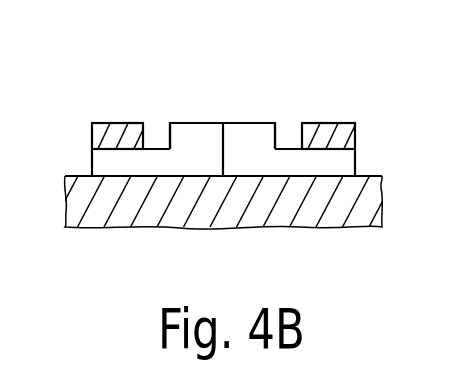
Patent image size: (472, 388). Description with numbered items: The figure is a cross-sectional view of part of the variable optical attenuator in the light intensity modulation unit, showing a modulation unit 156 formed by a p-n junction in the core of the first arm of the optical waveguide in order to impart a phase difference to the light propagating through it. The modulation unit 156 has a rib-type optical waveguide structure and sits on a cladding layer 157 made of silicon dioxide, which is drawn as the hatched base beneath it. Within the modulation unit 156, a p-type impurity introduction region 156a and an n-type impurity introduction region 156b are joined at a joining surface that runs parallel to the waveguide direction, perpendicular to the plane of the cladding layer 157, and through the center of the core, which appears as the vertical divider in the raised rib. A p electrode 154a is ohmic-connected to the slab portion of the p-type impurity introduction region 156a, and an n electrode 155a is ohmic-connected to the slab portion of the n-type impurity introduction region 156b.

The p electrode 154a is at (92, 140).
The n electrode 155a is at (355, 140).
The modulation unit 156 is at (223, 95).
The p-type impurity introduction region 156a is at (192, 123).
The n-type impurity introduction region 156b is at (253, 123).
The cladding layer 157 is at (383, 212).